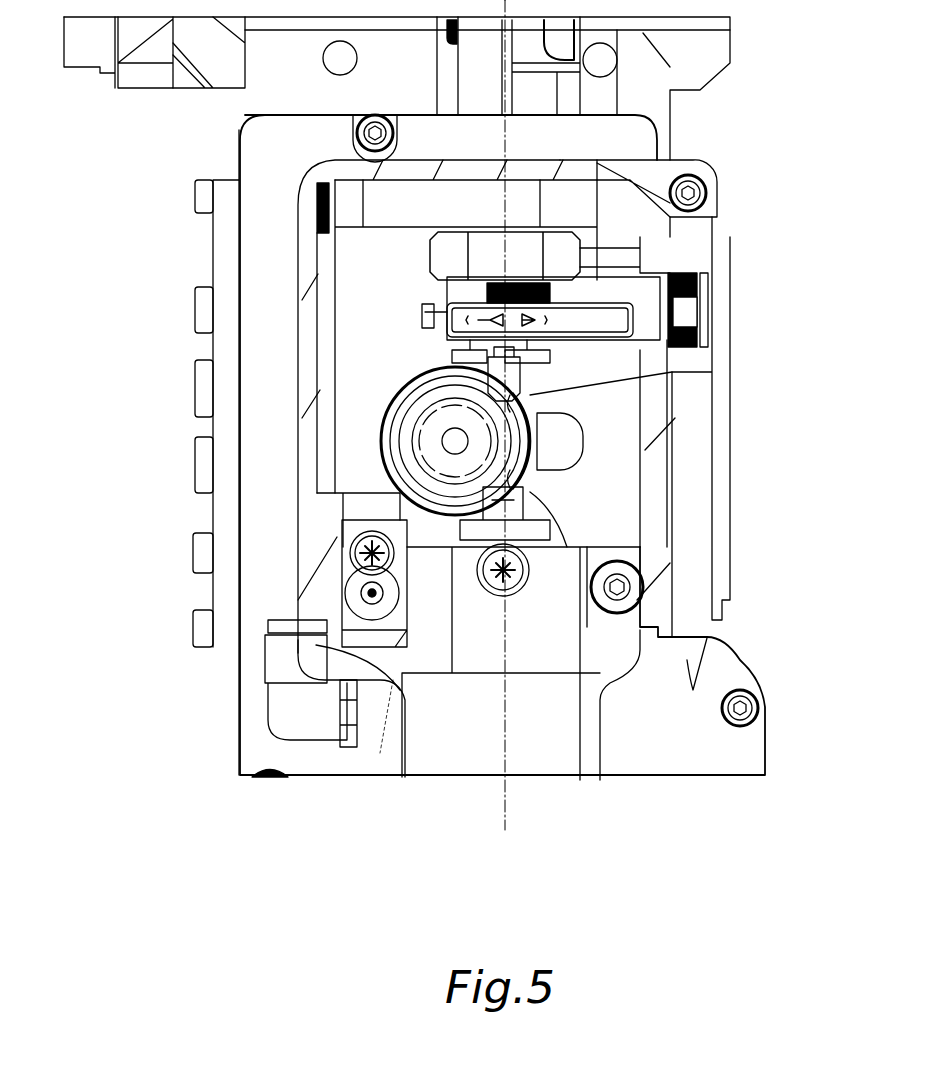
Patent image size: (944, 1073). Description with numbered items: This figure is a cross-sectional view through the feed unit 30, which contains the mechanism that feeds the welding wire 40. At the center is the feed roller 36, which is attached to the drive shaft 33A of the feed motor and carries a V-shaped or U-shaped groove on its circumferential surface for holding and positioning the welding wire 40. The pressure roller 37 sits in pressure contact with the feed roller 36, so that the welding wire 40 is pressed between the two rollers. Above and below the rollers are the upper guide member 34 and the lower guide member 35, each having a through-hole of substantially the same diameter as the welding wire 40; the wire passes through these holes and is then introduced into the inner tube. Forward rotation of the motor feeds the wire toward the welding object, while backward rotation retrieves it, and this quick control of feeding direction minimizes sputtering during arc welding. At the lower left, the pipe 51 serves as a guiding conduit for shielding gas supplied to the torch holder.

The feed unit 30 is at (776, 203).
The drive shaft 33A is at (443, 441).
The upper guide member 34 is at (625, 350).
The lower guide member 35 is at (520, 503).
The feed roller 36 is at (415, 405).
The pressure roller 37 is at (525, 440).
The welding wire 40 is at (528, 400).
The pipe 51 is at (272, 708).